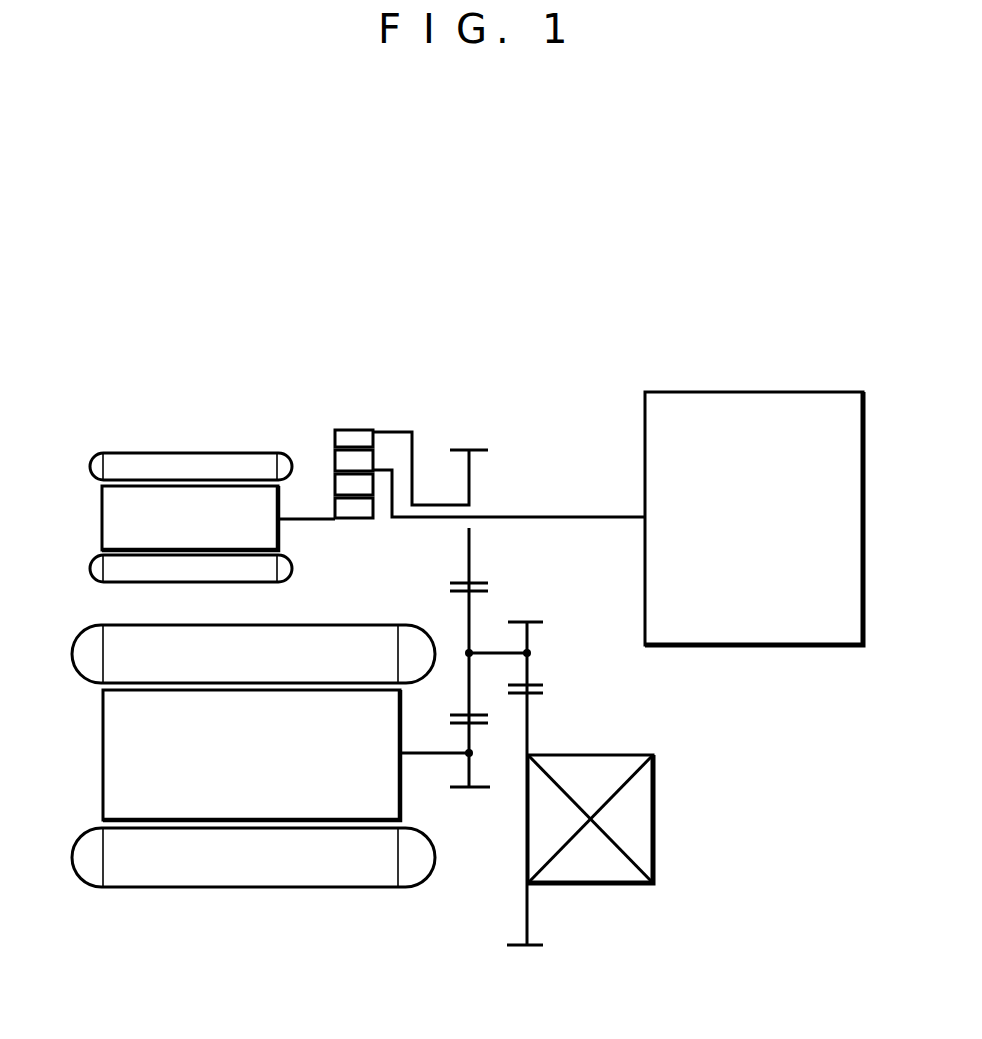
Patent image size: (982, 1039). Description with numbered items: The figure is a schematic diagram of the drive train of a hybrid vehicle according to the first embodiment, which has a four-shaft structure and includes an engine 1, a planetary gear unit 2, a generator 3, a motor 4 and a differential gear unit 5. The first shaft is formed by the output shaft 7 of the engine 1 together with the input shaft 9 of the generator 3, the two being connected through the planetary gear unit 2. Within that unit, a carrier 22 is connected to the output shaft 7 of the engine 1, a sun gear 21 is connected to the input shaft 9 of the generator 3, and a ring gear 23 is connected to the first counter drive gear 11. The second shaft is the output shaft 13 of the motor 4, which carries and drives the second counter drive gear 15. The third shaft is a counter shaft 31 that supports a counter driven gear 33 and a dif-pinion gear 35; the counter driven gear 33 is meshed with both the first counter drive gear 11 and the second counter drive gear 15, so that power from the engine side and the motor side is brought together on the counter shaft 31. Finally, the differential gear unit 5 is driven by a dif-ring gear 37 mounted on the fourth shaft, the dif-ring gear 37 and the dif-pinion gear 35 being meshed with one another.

The engine 1 is at (747, 647).
The planetary gear unit 2 is at (327, 453).
The generator 3 is at (168, 432).
The motor 4 is at (192, 914).
The differential gear unit 5 is at (655, 812).
The output shaft 7 is at (517, 517).
The input shaft 9 is at (305, 520).
The first counter drive gear 11 is at (478, 448).
The output shaft 13 is at (438, 755).
The second counter drive gear 15 is at (480, 795).
The sun gear 21 is at (373, 507).
The carrier 22 is at (335, 463).
The ring gear 23 is at (335, 436).
The counter shaft 31 is at (490, 652).
The counter driven gear 33 is at (458, 593).
The dif-pinion gear 35 is at (537, 625).
The dif-ring gear 37 is at (537, 695).